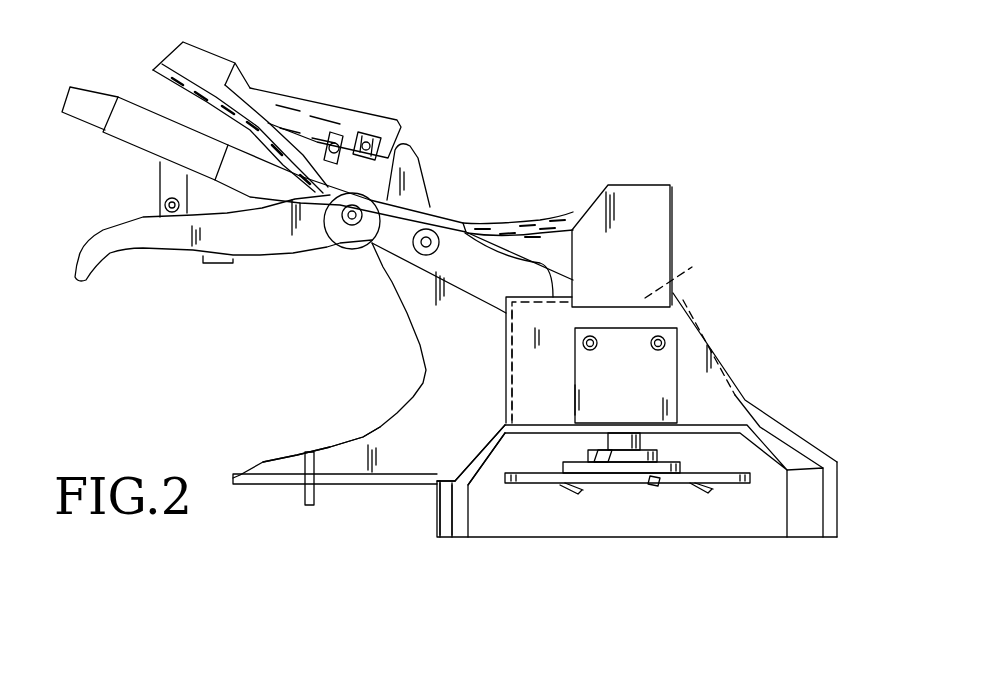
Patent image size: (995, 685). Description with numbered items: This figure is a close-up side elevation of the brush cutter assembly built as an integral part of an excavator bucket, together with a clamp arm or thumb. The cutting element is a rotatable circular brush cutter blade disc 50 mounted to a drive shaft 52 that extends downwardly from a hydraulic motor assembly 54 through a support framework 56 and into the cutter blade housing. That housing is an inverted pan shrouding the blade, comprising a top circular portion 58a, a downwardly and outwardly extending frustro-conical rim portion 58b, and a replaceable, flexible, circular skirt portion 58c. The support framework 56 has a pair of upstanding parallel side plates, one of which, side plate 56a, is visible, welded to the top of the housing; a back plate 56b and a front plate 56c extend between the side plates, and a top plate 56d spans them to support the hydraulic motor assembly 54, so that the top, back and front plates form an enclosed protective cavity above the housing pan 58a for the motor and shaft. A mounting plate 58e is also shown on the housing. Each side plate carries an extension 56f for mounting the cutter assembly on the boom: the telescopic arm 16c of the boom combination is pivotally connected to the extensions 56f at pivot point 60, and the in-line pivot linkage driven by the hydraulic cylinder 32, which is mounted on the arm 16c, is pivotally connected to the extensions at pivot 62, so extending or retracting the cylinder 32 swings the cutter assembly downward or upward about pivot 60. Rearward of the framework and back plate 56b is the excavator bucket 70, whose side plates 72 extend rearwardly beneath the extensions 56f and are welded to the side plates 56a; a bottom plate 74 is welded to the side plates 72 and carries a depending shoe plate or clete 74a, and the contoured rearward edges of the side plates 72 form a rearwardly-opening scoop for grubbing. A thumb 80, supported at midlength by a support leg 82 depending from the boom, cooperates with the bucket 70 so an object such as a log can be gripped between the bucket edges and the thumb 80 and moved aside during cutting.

The hydraulic cylinder 32 is at (272, 86).
The support leg 82 is at (160, 188).
The thumb 80 is at (107, 262).
The longitudinally-telescopic arm 16c is at (240, 178).
The pivot point 60 is at (351, 226).
The pivotal connection of linkage 62 is at (430, 233).
The excavator bucket 70 is at (390, 352).
The side plate extension 56f is at (482, 270).
The support framework 56 is at (652, 326).
The hydraulic motor assembly 54 is at (672, 252).
The top plate 56d is at (691, 275).
The front plate 56c is at (703, 326).
The back plate 56b is at (510, 348).
The side plate 56a is at (702, 402).
The top circular portion 58a is at (540, 432).
The mounting plate 58e is at (603, 391).
The frustro-conical rim portion 58b is at (492, 463).
The flexible circular skirt portion 58c is at (475, 517).
The drive shaft 52 is at (645, 441).
The brush cutter blade disc 50 is at (627, 478).
The bottom plate 74 is at (360, 485).
The shoe plate or clete 74a is at (303, 495).
The bucket side plates 72 is at (418, 450).